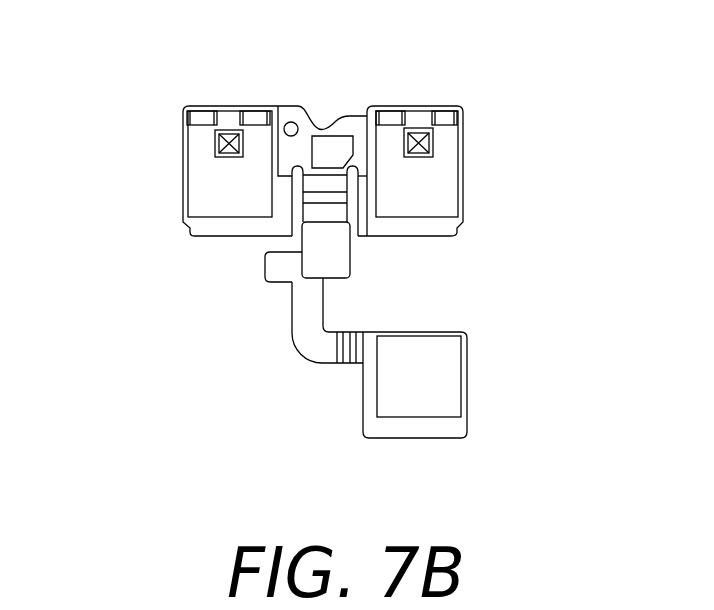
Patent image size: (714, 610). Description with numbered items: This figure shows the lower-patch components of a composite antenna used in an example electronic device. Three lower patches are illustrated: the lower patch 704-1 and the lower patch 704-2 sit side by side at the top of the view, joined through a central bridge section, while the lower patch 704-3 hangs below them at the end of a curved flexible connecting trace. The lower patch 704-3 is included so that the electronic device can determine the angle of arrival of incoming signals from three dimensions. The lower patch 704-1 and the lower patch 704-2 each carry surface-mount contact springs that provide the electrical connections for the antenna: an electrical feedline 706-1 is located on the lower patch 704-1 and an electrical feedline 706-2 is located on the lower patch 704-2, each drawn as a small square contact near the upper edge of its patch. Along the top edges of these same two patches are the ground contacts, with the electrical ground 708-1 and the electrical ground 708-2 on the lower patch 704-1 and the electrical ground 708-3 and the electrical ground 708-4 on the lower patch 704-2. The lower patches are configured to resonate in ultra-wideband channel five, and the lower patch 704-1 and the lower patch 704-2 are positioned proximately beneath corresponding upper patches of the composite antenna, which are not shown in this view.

The lower patch 704-1 is at (197, 192).
The lower patch 704-2 is at (447, 192).
The lower patch 704-3 is at (438, 382).
The electrical feedline 706-1 is at (217, 147).
The electrical feedline 706-2 is at (433, 142).
The electrical ground 708-1 is at (207, 110).
The electrical ground 708-2 is at (257, 110).
The electrical ground 708-3 is at (395, 108).
The electrical ground 708-4 is at (448, 108).